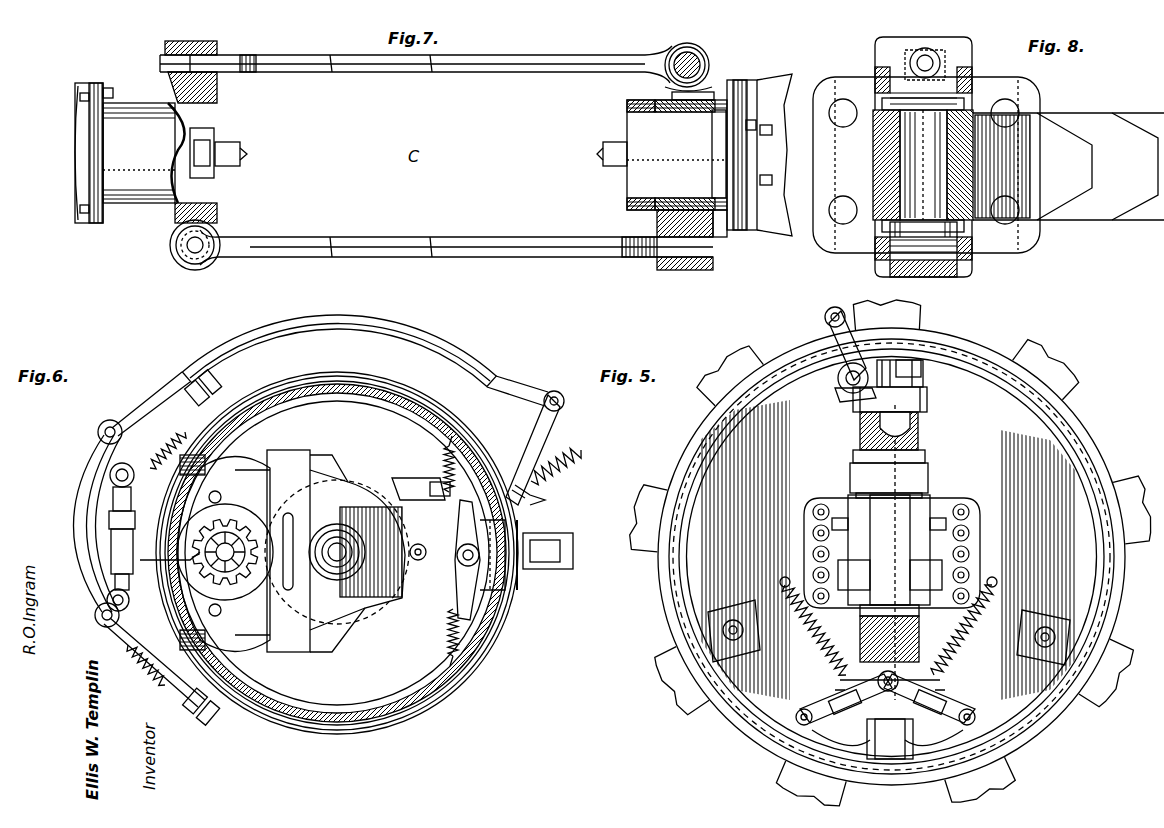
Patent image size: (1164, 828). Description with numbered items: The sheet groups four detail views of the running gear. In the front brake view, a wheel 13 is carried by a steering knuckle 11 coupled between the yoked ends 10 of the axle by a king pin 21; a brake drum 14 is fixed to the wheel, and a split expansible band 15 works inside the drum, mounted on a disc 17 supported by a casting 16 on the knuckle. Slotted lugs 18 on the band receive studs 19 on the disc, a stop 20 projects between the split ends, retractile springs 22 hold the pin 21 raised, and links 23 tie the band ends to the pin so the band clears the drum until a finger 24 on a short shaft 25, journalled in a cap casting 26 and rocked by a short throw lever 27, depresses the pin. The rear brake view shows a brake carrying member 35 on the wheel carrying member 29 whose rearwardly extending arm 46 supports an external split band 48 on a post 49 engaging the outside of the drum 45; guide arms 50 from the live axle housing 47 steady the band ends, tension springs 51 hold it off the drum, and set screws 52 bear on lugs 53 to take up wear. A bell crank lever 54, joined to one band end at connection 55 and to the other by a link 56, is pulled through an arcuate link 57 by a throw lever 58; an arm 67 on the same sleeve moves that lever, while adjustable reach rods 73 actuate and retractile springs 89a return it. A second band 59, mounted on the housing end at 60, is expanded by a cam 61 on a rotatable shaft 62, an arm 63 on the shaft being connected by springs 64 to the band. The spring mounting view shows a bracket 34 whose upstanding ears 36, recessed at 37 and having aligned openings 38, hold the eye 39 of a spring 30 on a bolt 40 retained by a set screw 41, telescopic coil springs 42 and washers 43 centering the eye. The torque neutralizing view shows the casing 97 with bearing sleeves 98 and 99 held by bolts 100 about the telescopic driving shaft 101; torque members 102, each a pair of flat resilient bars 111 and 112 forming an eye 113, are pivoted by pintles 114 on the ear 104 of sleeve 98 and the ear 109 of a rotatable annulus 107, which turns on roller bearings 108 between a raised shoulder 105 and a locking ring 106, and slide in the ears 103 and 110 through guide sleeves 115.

In FIG. 5, the yoked ends 10 is at (918, 440).
In FIG. 5, the steering knuckle 11 is at (930, 500).
In FIG. 5, the wheel 13 is at (1060, 374).
In FIG. 5, the brake drum 14 is at (1125, 576).
In FIG. 5, the brake band 15 is at (1050, 440).
In FIG. 5, the casting 16 is at (832, 498).
In FIG. 5, the disc 17 is at (887, 550).
In FIG. 5, the slotted lugs 18 is at (921, 368).
In FIG. 5, the studs 19 is at (720, 628).
In FIG. 5, the stop 20 is at (890, 762).
In FIG. 5, the king pin 21 is at (905, 470).
In FIG. 5, the retractile springs 22 is at (820, 655).
In FIG. 5, the links 23 is at (835, 700).
In FIG. 5, the finger 24 is at (923, 382).
In FIG. 5, the short shaft 25 is at (838, 396).
In FIG. 6, the cap casting 26 is at (167, 563).
In FIG. 5, the cap casting 26 is at (927, 414).
In FIG. 5, the short throw lever 27 is at (826, 318).
In FIG. 6, the wheel carrying member 29 is at (348, 612).
In FIG. 8, the springs 30 is at (1068, 166).
In FIG. 8, the brackets 34 is at (1040, 236).
In FIG. 6, the brake carrying members 35 is at (362, 590).
In FIG. 8, the upstanding ears 36 is at (972, 48).
In FIG. 8, the recesses 37 is at (873, 240).
In FIG. 8, the openings 38 is at (880, 66).
In FIG. 8, the eye 39 is at (900, 55).
In FIG. 8, the bolt or pintle 40 is at (900, 176).
In FIG. 8, the set screw 41 is at (928, 55).
In FIG. 8, the telescopic coil springs 42 is at (975, 104).
In FIG. 8, the washers 43 is at (870, 104).
In FIG. 6, the brake drums 45 is at (322, 722).
In FIG. 6, the rearwardly extending arm 46 is at (350, 510).
In FIG. 6, the live axle housing 47 is at (224, 535).
In FIG. 6, the split expansible band 48 is at (440, 708).
In FIG. 6, the post or arm 49 is at (548, 571).
In FIG. 6, the guide arms 50 is at (238, 455).
In FIG. 6, the tension springs 51 is at (160, 440).
In FIG. 6, the set screws 52 is at (212, 400).
In FIG. 6, the lugs 53 is at (128, 405).
In FIG. 6, the bell crank lever 54 is at (111, 552).
In FIG. 6, the connection 55 is at (110, 472).
In FIG. 6, the link 56 is at (109, 520).
In FIG. 6, the arcuate link 57 is at (332, 316).
In FIG. 6, the throw lever 58 is at (540, 406).
In FIG. 6, the second expansible split brake band 59 is at (343, 707).
In FIG. 6, the band mounting 60 is at (113, 497).
In FIG. 6, the cam 61 is at (456, 560).
In FIG. 6, the rotatable shaft 62 is at (418, 544).
In FIG. 6, the arm 63 is at (505, 598).
In FIG. 6, the springs 64 is at (440, 438).
In FIG. 6, the arm 67 is at (540, 498).
In FIG. 6, the adjustable reach rods 73 is at (405, 480).
In FIG. 6, the retractile springs 89a is at (583, 452).
In FIG. 7, the casing 97 is at (84, 224).
In FIG. 7, the bearing sleeve 98 is at (158, 153).
In FIG. 7, the bearing sleeve 99 is at (677, 155).
In FIG. 7, the bolts 100 is at (113, 93).
In FIG. 7, the telescopic driving shaft 101 is at (248, 154).
In FIG. 7, the torque neutralizing members 102 is at (440, 74).
In FIG. 7, the ear 103 is at (193, 42).
In FIG. 7, the ear 104 is at (175, 215).
In FIG. 7, the raised shoulder 105 is at (712, 130).
In FIG. 7, the locking ring 106 is at (626, 101).
In FIG. 7, the rotatable annulus 107 is at (656, 220).
In FIG. 7, the roller bearings 108 is at (722, 225).
In FIG. 7, the ear 109 is at (715, 82).
In FIG. 7, the ear 110 is at (700, 268).
In FIG. 7, the resilient bar 111 is at (343, 58).
In FIG. 7, the resilient bar 112 is at (345, 74).
In FIG. 7, the eye 113 is at (212, 255).
In FIG. 7, the pintle 114 is at (192, 252).
In FIG. 7, the guide sleeves 115 is at (222, 74).